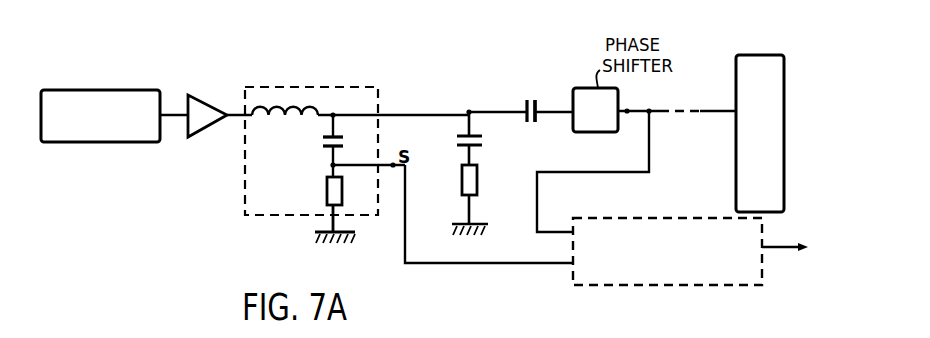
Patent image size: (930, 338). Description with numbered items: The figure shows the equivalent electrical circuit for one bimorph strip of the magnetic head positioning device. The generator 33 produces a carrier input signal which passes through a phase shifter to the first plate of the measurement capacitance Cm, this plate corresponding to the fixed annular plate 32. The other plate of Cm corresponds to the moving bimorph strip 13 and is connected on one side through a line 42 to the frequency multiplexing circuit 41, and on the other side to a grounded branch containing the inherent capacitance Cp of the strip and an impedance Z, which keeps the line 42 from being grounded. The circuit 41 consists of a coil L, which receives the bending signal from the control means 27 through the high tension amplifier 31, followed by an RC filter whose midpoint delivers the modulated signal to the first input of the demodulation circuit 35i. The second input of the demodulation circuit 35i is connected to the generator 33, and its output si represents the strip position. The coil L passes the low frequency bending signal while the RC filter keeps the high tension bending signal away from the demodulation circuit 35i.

The control means 27 is at (123, 89).
The high tension amplifier 31 is at (211, 96).
The frequency multiplexing circuit 41 is at (318, 87).
The line 42 is at (442, 109).
The bimorph strip 13 is at (527, 121).
The fixed annular plate 32 is at (536, 104).
The generator 33 is at (752, 55).
The demodulation circuit 35i is at (690, 287).